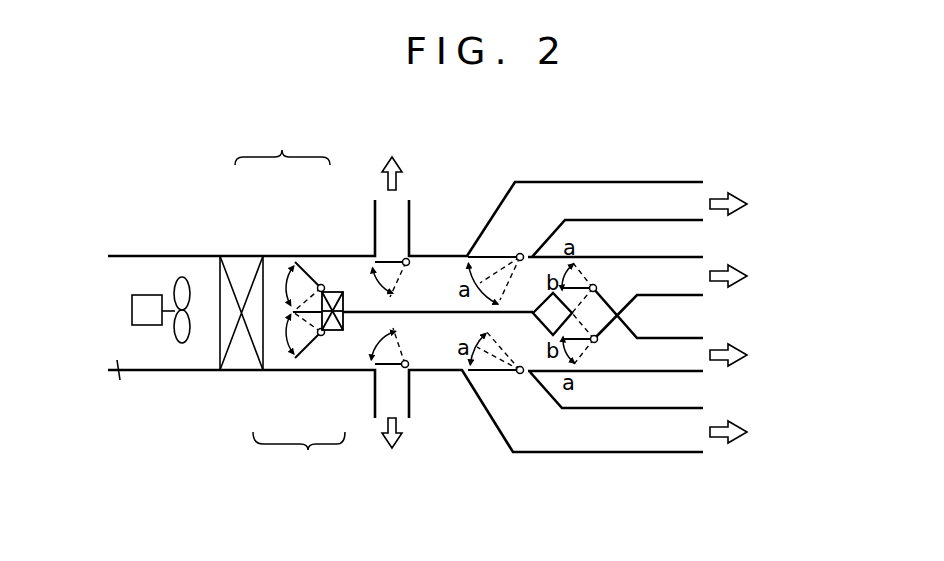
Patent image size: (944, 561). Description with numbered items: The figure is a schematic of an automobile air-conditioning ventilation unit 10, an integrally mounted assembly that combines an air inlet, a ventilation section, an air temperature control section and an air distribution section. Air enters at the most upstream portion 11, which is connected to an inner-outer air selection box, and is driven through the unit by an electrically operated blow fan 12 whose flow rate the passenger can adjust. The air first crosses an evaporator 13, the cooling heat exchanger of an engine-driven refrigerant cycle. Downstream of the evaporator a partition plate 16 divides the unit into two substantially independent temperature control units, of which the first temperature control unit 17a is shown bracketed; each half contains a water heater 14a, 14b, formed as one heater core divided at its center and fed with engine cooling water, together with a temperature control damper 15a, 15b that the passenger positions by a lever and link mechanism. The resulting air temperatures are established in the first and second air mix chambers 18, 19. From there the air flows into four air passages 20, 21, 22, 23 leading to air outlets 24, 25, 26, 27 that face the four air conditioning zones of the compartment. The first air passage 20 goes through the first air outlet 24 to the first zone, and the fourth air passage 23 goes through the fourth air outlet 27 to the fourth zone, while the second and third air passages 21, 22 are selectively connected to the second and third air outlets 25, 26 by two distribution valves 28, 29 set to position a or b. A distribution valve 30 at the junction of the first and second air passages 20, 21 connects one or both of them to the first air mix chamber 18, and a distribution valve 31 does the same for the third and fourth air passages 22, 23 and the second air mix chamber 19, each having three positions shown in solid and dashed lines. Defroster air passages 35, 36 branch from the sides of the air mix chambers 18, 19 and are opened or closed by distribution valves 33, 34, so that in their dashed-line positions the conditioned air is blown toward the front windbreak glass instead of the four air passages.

The ventilation unit 10 is at (197, 255).
The most upstream portion 11 is at (127, 383).
The blow fan 12 is at (144, 318).
The evaporator 13 is at (238, 356).
The water heater 14a is at (336, 290).
The water heater 14b is at (327, 336).
The temperature control damper 15a is at (299, 259).
The temperature control damper 15b is at (303, 360).
The partition plate 16 is at (347, 318).
The first temperature control unit 17a is at (290, 285).
The first air mix chamber 18 is at (370, 302).
The second air mix chamber 19 is at (370, 346).
The first air passage 20 is at (539, 232).
The second air passage 21 is at (546, 301).
The third air passage 22 is at (534, 347).
The fourth air passage 23 is at (536, 424).
The first air outlet 24 is at (697, 203).
The second air outlet 25 is at (697, 276).
The third air outlet 26 is at (697, 357).
The fourth air outlet 27 is at (697, 435).
The distribution valve 28 is at (593, 285).
The distribution valve 29 is at (580, 345).
The distribution valve 30 is at (490, 258).
The distribution valve 31 is at (483, 374).
The distribution valve 33 is at (390, 258).
The distribution valve 34 is at (392, 370).
The defroster air passage 35 is at (397, 210).
The defroster air passage 36 is at (397, 405).